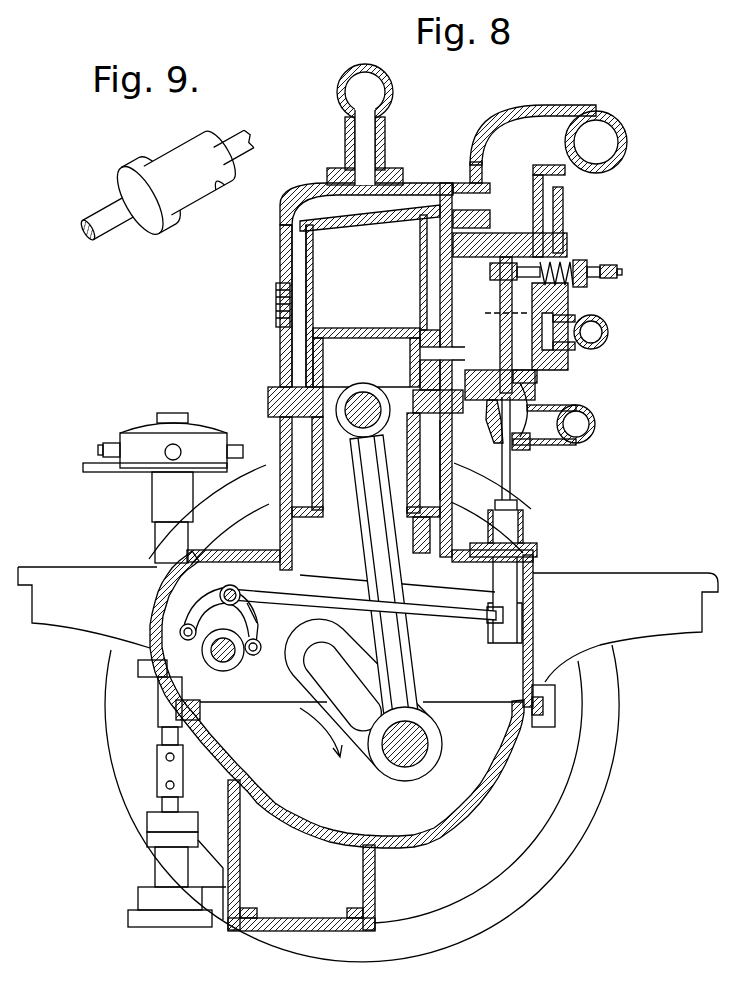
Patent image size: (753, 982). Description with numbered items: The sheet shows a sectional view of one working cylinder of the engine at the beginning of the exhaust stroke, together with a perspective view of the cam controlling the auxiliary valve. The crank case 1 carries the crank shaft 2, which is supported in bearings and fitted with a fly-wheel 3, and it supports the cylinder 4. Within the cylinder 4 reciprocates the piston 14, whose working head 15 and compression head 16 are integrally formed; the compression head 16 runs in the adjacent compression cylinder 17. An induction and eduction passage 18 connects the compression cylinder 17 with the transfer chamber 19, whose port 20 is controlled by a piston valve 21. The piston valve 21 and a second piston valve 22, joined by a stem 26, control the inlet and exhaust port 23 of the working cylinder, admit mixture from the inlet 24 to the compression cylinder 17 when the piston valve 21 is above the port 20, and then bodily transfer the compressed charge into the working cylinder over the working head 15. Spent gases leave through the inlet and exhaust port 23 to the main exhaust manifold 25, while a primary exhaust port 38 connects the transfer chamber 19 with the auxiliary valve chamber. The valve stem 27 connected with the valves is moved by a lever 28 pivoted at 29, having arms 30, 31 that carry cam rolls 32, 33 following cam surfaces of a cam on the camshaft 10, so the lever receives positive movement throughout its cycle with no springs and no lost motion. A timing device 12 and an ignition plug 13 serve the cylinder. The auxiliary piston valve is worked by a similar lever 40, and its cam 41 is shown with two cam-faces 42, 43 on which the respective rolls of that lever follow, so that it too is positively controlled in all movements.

In FIG. 8, the crank case 1 is at (480, 793).
In FIG. 8, the crank shaft 2 is at (430, 743).
In FIG. 8, the fly-wheel 3 is at (570, 830).
In FIG. 8, the cylinder 4 is at (276, 300).
In FIG. 9, the camshaft 10 is at (87, 242).
In FIG. 8, the camshaft 10 is at (231, 660).
In FIG. 8, the timing device 12 is at (137, 442).
In FIG. 8, the ignition plug 13 is at (587, 267).
In FIG. 8, the piston 14 is at (315, 440).
In FIG. 8, the working head 15 is at (355, 328).
In FIG. 8, the compression head 16 is at (452, 503).
In FIG. 8, the compression cylinder 17 is at (300, 473).
In FIG. 8, the induction and eduction passage 18 is at (437, 393).
In FIG. 8, the transfer chamber 19 is at (565, 358).
In FIG. 8, the port 20 is at (515, 400).
In FIG. 8, the piston valve 21 is at (520, 410).
In FIG. 8, the piston valve 22 is at (523, 243).
In FIG. 8, the inlet and exhaust port 23 is at (467, 225).
In FIG. 8, the inlet 24 is at (586, 427).
In FIG. 8, the main exhaust manifold 25 is at (607, 140).
In FIG. 8, the stem 26 is at (568, 300).
In FIG. 8, the valve stem 27 is at (506, 475).
In FIG. 8, the lever 28 is at (437, 612).
In FIG. 8, the pivot 29 is at (220, 592).
In FIG. 8, the arm 30 is at (258, 622).
In FIG. 8, the arm 31 is at (200, 610).
In FIG. 8, the cam roll 32 is at (261, 650).
In FIG. 8, the cam roll 33 is at (182, 635).
In FIG. 8, the primary exhaust port 38 is at (590, 285).
In FIG. 8, the lever 40 is at (457, 583).
In FIG. 9, the cam 41 is at (182, 153).
In FIG. 9, the cam-face 42 is at (167, 223).
In FIG. 9, the cam-face 43 is at (220, 193).